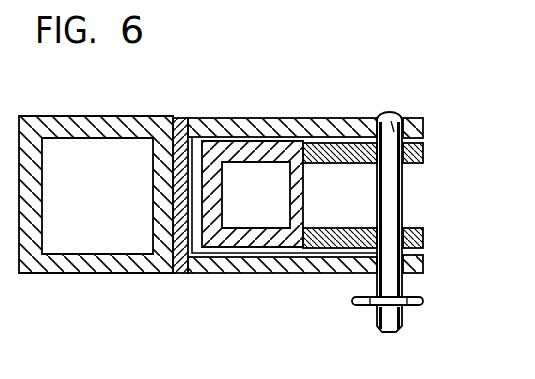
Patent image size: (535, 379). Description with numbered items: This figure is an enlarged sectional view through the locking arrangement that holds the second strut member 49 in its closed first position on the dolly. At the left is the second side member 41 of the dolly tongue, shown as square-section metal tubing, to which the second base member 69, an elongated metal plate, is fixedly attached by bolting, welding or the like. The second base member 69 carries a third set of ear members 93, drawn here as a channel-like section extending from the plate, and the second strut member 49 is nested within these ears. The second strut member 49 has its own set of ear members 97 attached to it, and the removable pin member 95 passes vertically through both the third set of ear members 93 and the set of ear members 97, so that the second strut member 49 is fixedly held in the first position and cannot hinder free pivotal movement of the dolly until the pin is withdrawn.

The second side member 41 is at (93, 268).
The second base member 69 is at (180, 273).
The third set of ear members 93 is at (291, 120).
The second strut member 49 is at (294, 240).
The removable pin member 95 is at (400, 119).
The set of ear members 97 is at (423, 152).